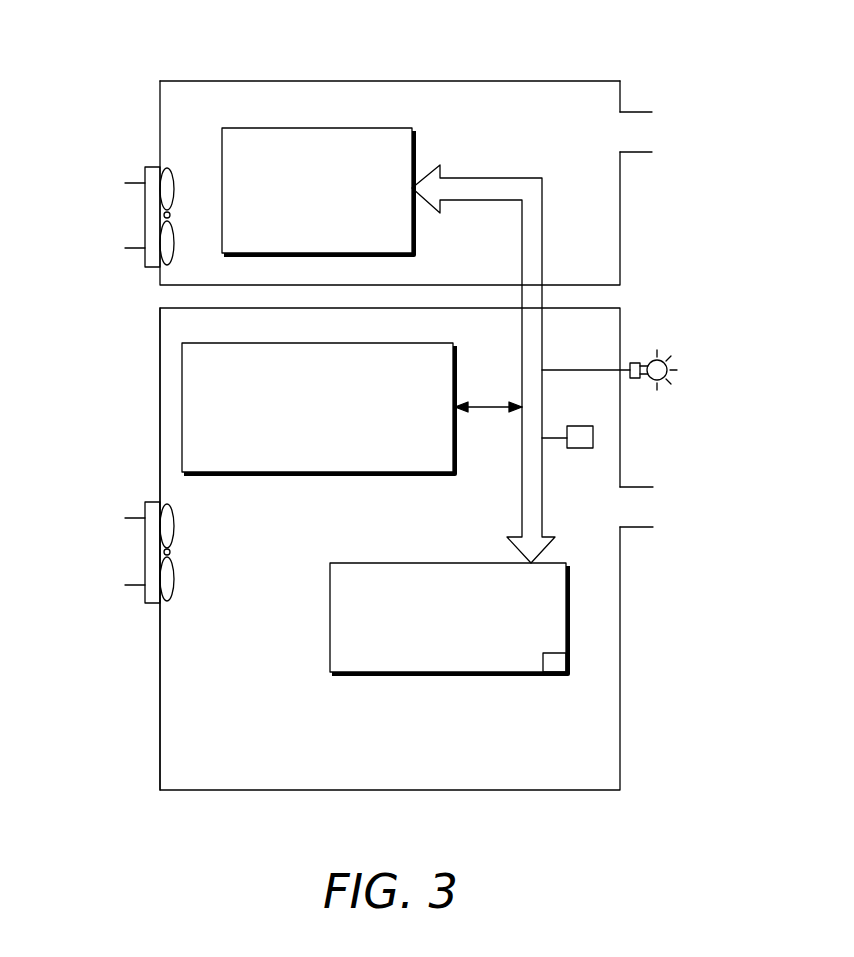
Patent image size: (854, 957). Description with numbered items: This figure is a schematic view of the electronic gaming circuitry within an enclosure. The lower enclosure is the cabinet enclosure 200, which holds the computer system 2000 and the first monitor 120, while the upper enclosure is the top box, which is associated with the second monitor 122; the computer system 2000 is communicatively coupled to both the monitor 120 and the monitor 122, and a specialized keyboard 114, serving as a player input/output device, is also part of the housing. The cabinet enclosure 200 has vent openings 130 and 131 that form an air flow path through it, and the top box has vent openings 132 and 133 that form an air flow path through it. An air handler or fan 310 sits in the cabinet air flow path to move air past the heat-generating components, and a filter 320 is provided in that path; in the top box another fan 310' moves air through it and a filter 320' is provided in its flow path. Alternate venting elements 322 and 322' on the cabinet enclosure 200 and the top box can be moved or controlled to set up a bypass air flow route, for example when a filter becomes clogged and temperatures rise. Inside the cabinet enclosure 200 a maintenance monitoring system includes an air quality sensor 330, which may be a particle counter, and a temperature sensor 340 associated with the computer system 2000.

The specialized keyboard 114 is at (608, 252).
The alternate venting element 322' is at (390, 53).
The vent opening 132 is at (642, 152).
The vent opening 130 is at (643, 527).
The alternate venting element 322 is at (126, 549).
The second monitor 122 is at (375, 229).
The first monitor 120 is at (417, 445).
The computer system 2000 is at (518, 644).
The temperature sensor 340 is at (557, 665).
The cabinet enclosure 200 is at (620, 344).
The air quality sensor 330 is at (581, 448).
The filter 320' is at (123, 233).
The fan 310' is at (139, 198).
The vent opening 133 is at (164, 216).
The filter 320 is at (127, 568).
The fan 310 is at (144, 536).
The vent opening 131 is at (145, 551).